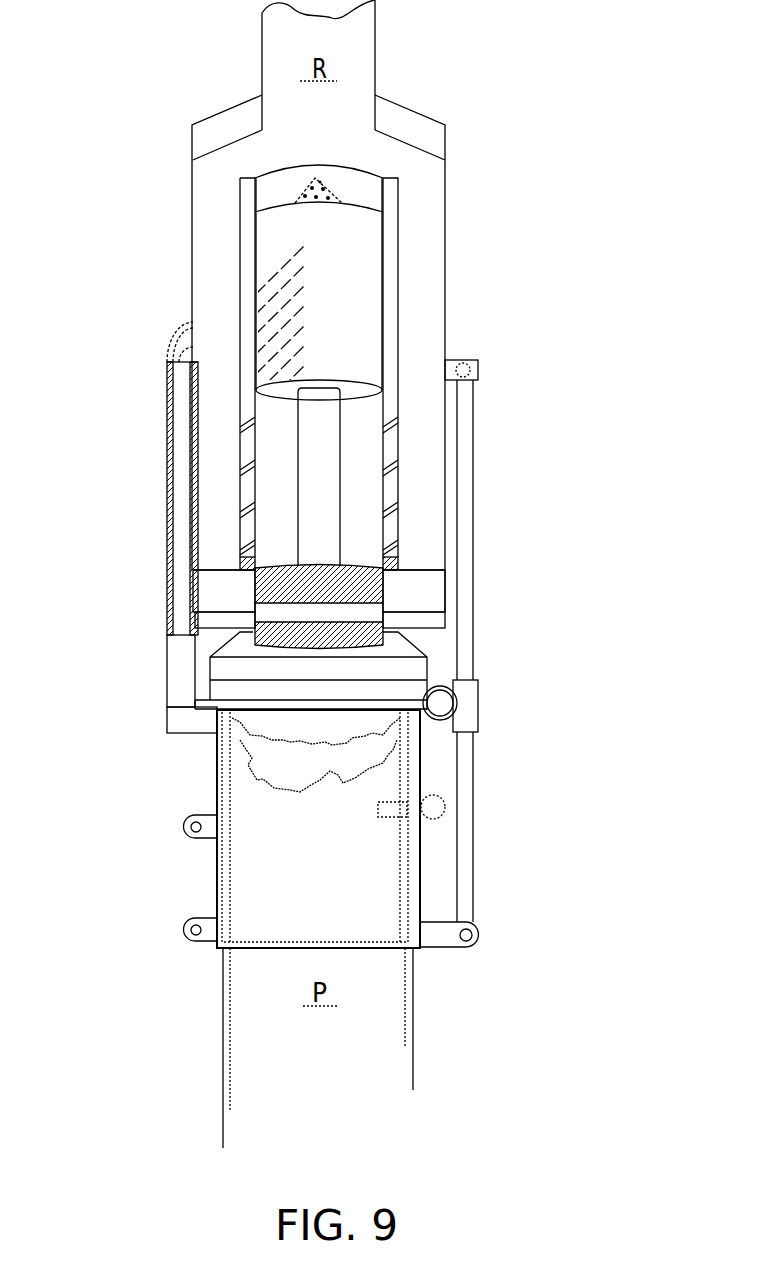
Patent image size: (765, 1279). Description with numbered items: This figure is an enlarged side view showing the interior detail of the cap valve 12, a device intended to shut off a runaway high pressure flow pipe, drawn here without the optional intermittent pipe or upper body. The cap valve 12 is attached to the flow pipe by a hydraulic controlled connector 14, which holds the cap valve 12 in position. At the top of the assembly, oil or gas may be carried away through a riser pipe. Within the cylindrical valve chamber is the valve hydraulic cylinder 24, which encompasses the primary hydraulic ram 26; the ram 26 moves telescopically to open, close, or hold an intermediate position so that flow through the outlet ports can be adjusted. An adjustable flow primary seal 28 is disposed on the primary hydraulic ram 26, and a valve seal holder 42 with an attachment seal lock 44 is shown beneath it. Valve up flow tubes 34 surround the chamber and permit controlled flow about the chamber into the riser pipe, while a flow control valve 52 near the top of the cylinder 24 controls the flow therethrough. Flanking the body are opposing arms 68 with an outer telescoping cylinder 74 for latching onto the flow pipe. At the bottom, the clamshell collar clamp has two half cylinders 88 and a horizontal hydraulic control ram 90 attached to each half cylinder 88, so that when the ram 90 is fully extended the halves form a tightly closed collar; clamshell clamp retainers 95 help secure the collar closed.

The cap valve 12 is at (560, 399).
The hydraulic controlled connector 14 is at (556, 663).
The valve hydraulic cylinder 24 is at (337, 300).
The primary hydraulic ram 26 is at (337, 483).
The adjustable flow primary seal 28 is at (383, 588).
The valve up flow tubes 34 is at (438, 300).
The valve seal holder 42 is at (290, 620).
The attachment seal lock 44 is at (385, 630).
The flow control valve 52 is at (317, 177).
The opposing arms 68 is at (132, 658).
The outer telescoping cylinder 74 is at (477, 502).
The half cylinders 88 is at (337, 865).
The horizontal hydraulic control ram 90 is at (428, 800).
The clamshell clamp retainer 95 is at (185, 930).